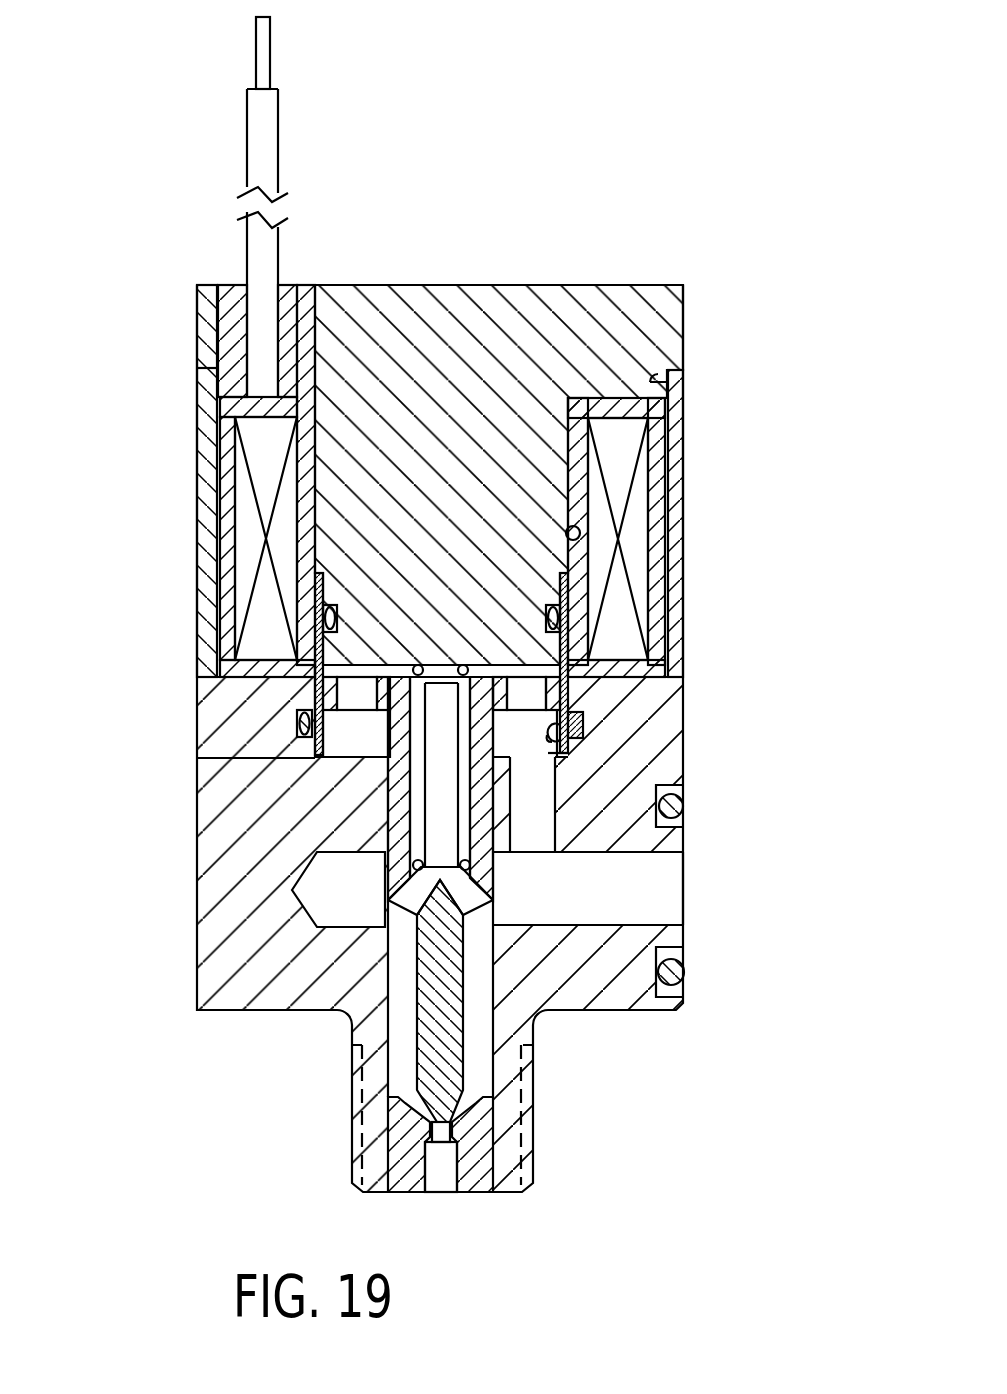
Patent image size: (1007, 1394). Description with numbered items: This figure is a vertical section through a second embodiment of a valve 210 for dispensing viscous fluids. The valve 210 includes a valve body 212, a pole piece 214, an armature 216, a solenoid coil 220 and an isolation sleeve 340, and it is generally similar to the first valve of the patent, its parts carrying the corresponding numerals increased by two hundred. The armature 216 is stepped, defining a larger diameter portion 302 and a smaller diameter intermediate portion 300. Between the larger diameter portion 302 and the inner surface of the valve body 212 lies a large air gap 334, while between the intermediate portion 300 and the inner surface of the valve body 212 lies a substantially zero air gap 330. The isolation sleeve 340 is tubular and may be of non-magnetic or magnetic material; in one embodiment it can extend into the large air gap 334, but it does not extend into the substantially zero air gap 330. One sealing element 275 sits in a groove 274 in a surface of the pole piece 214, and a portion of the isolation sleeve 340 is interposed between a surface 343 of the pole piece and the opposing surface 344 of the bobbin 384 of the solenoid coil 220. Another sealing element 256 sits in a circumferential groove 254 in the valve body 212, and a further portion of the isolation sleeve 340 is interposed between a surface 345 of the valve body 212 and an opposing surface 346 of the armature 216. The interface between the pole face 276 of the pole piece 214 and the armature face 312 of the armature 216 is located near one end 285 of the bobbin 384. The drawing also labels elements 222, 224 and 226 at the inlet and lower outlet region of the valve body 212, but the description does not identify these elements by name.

The valve 210 is at (746, 100).
The valve body 212 is at (183, 946).
The pole piece 214 is at (687, 320).
The armature 216 is at (400, 1056).
The solenoid coil 220 is at (686, 466).
The fuel inlet 222 is at (681, 893).
The outlet orifice 224 is at (440, 1195).
The valve seat 226 is at (405, 1197).
The circumferential groove 254 is at (566, 750).
The sealing element 256 is at (583, 722).
The groove 274 is at (568, 652).
The sealing element 275 is at (560, 618).
The pole face 276 is at (388, 668).
The end of bobbin 285 is at (220, 675).
The intermediate portion 300 is at (495, 900).
The larger diameter portion 302 is at (312, 708).
The armature face 312 is at (314, 685).
The substantially zero air gap 330 is at (375, 857).
The large air gap 334 is at (684, 808).
The isolation sleeve 340 is at (305, 757).
The surface of pole piece 343 is at (573, 533).
The opposing surface of bobbin 344 is at (568, 450).
The surface of valve body 345 is at (540, 760).
The opposing surface of armature 346 is at (583, 712).
The bobbin 384 is at (668, 375).